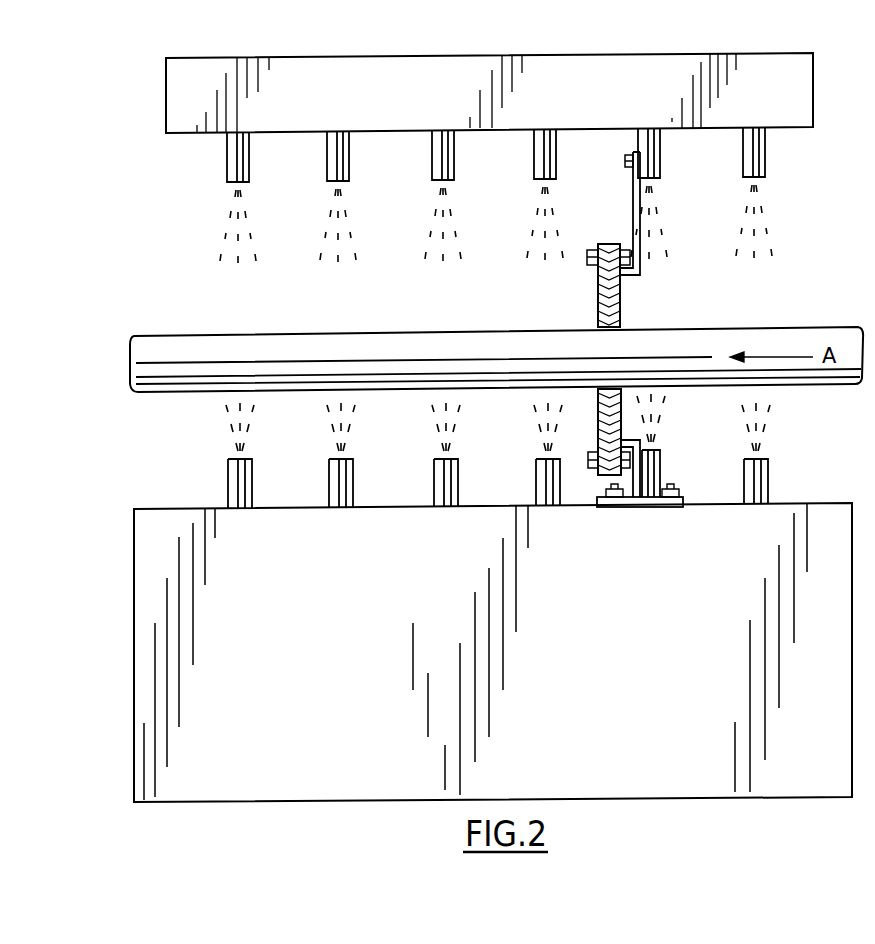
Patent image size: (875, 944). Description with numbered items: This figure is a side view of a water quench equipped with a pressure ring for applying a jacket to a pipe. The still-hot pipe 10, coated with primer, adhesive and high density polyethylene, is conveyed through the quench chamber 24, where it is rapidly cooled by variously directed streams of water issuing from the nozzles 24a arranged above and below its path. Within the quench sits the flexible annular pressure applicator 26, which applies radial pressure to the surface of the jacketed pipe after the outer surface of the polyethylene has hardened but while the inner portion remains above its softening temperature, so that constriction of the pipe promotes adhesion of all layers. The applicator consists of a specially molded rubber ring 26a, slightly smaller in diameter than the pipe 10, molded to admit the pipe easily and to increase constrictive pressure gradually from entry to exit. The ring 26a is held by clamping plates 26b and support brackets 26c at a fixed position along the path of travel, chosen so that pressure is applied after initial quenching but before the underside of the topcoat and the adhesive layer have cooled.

The pipe 10 is at (831, 387).
The quench chamber 24 is at (300, 57).
The nozzles 24a is at (770, 137).
The flexible annular pressure applicator 26 is at (639, 239).
The rubber ring 26a is at (622, 311).
The clamping plates 26b is at (604, 408).
The support brackets 26c is at (655, 470).